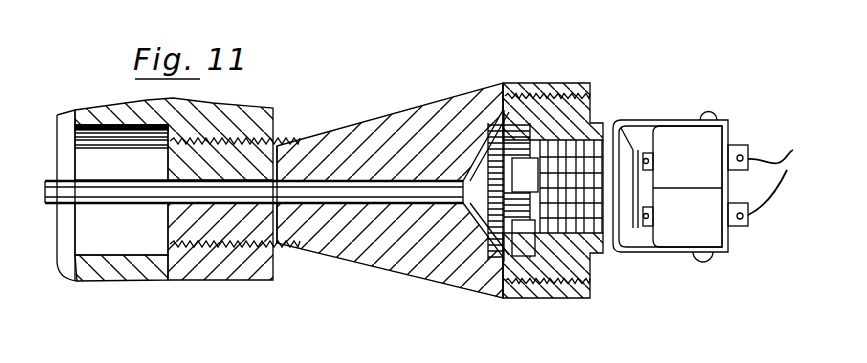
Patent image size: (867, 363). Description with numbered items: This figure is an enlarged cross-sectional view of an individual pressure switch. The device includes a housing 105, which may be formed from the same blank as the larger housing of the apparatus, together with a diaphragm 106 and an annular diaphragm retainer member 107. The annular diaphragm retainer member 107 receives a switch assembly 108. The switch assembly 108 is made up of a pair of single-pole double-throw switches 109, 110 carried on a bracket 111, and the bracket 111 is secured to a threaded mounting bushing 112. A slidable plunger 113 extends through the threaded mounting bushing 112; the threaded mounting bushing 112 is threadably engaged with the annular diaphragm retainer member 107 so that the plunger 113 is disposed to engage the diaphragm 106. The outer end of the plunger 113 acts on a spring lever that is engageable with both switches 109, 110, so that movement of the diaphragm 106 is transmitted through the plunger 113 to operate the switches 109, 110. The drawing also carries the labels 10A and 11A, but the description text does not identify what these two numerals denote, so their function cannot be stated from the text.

The threaded body section 10A is at (333, 266).
The housing 105 is at (420, 267).
The diaphragm 106 is at (504, 243).
The annular diaphragm retainer member 107 is at (593, 268).
The switch assembly 108 is at (642, 119).
The single-pole double-throw switch 109 is at (717, 142).
The single-pole double-throw switch 110 is at (713, 239).
The bracket 111 is at (673, 125).
The contact 11A is at (633, 154).
The threaded mounting bushing 112 is at (572, 148).
The slidable plunger 113 is at (522, 172).